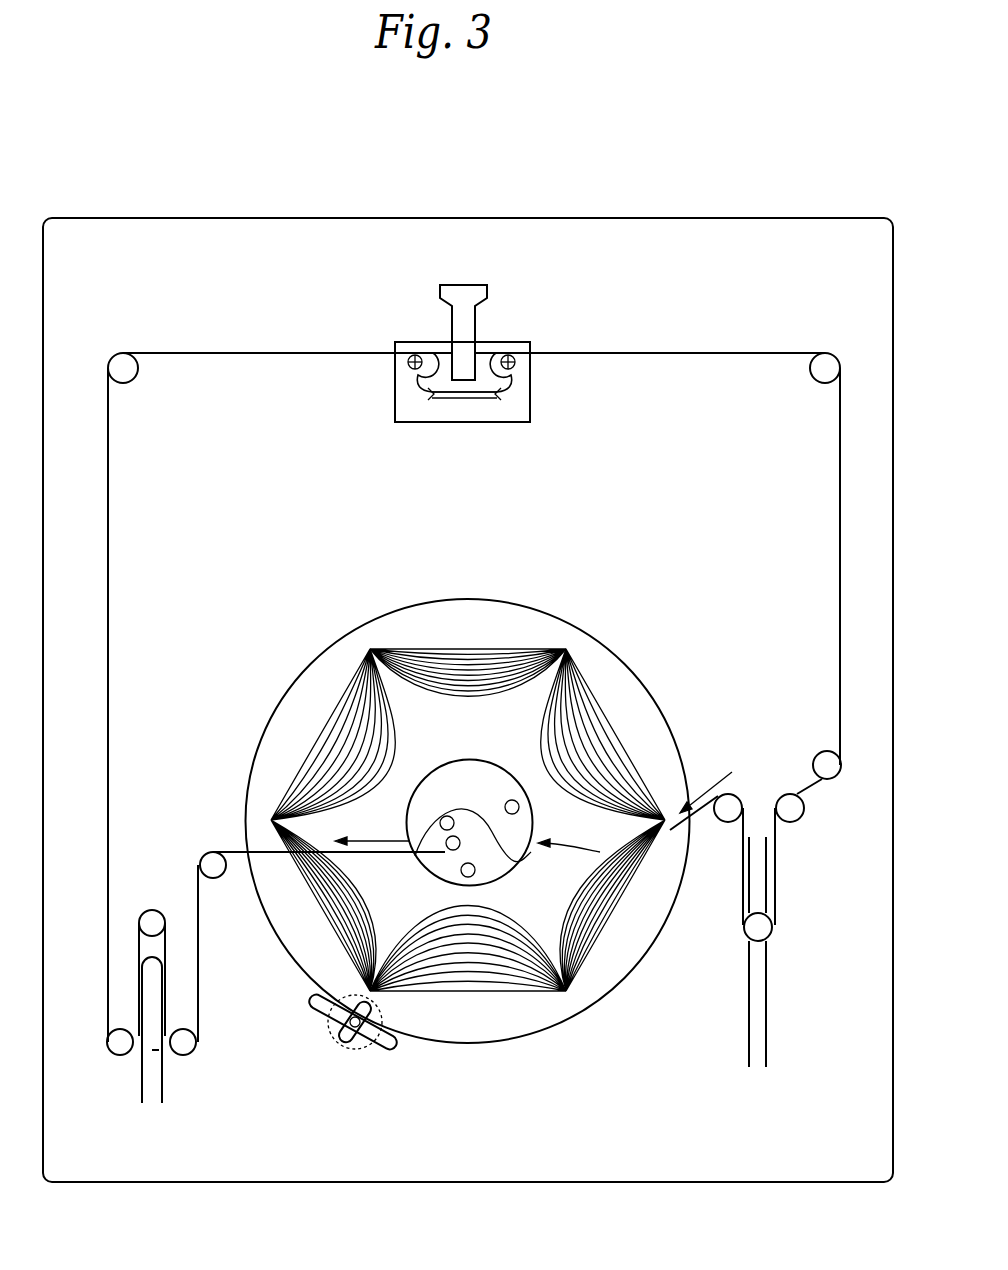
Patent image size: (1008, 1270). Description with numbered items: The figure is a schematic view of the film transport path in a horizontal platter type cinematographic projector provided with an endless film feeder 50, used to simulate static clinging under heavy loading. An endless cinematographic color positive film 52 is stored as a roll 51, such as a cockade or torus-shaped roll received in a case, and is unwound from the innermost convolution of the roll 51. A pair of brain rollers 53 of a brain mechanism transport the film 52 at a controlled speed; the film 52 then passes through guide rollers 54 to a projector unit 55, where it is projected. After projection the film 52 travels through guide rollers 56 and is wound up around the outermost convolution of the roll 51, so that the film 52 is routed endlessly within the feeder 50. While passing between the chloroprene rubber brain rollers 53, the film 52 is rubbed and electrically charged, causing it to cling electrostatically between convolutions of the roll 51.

The endless film feeder 50 is at (715, 210).
The roll 51 is at (320, 708).
The cinematographic color positive film 52 is at (513, 655).
The brain rollers 53 is at (445, 838).
The guide rollers 54 is at (204, 1056).
The projector unit 55 is at (512, 342).
The guide rollers 56 is at (788, 911).